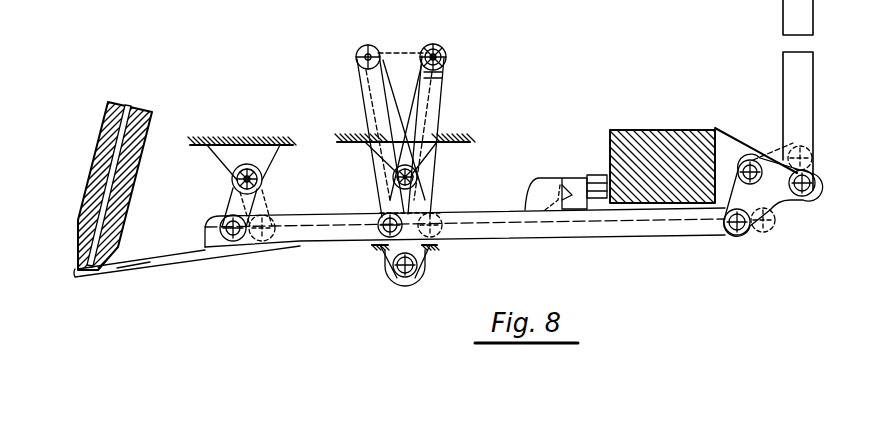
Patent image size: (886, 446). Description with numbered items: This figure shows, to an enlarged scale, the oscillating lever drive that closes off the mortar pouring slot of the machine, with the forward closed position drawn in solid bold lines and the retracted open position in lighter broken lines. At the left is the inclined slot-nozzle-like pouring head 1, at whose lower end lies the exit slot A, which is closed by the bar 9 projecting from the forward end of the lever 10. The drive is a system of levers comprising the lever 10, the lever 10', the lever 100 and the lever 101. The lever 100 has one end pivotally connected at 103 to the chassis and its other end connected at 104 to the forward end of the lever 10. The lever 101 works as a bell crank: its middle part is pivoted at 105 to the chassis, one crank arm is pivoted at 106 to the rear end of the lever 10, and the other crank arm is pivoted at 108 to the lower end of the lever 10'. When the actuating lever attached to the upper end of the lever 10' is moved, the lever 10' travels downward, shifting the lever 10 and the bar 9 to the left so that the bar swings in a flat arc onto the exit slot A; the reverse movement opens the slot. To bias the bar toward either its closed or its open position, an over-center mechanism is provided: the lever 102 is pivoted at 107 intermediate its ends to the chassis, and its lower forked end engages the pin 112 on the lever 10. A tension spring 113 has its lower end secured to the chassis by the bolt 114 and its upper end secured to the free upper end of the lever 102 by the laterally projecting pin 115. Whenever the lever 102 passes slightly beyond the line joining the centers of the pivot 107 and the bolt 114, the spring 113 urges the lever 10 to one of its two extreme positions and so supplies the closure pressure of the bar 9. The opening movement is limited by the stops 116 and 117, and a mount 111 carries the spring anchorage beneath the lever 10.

The pouring head 1 is at (103, 172).
The exit slot A is at (78, 268).
The bar 9 is at (150, 267).
The lever 10 is at (465, 241).
The lever 10' is at (779, 95).
The lever 100 is at (230, 203).
The bell crank lever 101 is at (787, 200).
The lever 102 is at (433, 92).
The pivot connection 103 is at (233, 172).
The pivot connection 104 is at (230, 228).
The pivot connection 105 is at (750, 165).
The pivot connection 106 is at (738, 235).
The pivot 107 is at (392, 175).
The pivot connection 108 is at (815, 182).
The mount 111 is at (372, 250).
The pin 112 is at (378, 212).
The tension spring 113 is at (398, 278).
The bolt 114 is at (393, 273).
The pin 115 is at (444, 57).
The stop 116 is at (568, 185).
The stop 117 is at (597, 182).